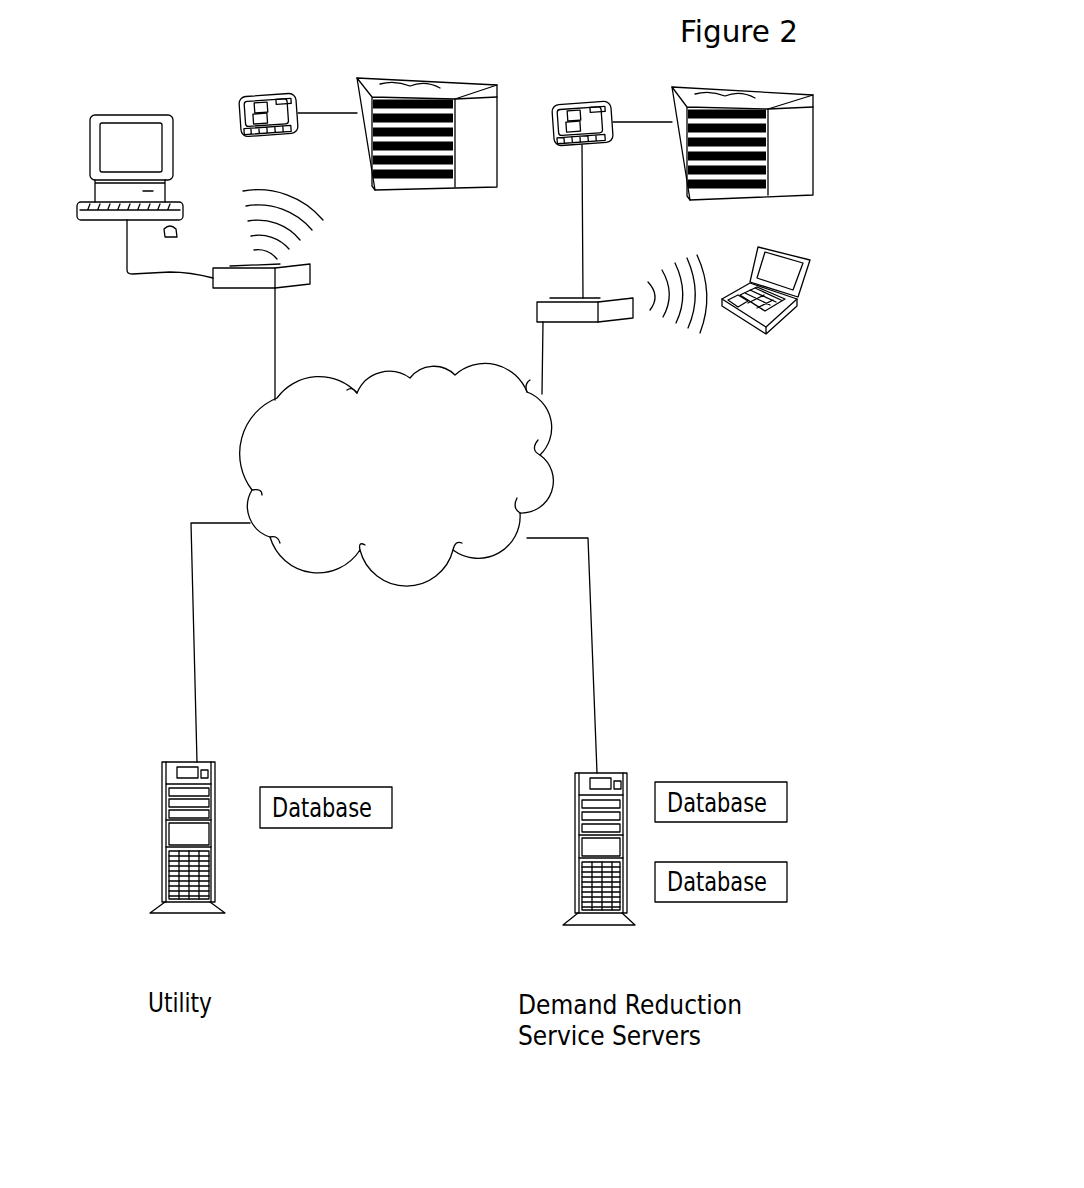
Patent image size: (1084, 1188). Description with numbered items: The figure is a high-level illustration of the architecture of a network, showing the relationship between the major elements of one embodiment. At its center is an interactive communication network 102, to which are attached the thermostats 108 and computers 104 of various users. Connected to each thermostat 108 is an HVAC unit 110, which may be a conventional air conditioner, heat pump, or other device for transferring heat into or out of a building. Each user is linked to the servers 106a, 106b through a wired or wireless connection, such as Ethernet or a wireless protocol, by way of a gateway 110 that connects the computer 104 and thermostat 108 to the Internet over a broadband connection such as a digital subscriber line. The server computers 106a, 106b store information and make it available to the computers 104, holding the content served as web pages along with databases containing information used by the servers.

The interactive communication network 102 is at (560, 443).
The computer 104 is at (112, 115).
The server computer 106a is at (575, 810).
The server computer 106b is at (160, 820).
The thermostat 108 is at (278, 93).
The HVAC unit 110 is at (410, 77).